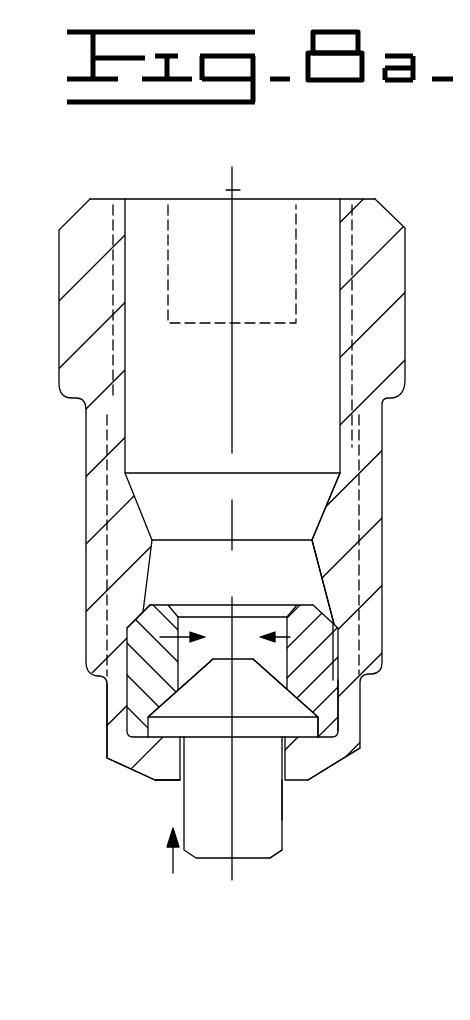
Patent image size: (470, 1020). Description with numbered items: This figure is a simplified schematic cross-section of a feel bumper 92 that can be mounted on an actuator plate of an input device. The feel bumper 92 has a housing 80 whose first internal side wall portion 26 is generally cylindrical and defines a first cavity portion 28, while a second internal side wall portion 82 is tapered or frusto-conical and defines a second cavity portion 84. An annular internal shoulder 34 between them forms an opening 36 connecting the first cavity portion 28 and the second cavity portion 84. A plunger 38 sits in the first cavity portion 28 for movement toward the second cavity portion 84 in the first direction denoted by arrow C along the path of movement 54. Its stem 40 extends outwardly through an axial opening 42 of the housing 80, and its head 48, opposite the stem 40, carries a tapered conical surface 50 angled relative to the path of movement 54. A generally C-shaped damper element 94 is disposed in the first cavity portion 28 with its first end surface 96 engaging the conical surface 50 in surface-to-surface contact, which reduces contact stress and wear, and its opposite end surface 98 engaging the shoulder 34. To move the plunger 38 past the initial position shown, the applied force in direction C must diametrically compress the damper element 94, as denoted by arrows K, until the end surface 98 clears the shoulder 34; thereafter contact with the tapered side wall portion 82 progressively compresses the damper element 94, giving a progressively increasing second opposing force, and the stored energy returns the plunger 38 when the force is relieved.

The first internal side wall portion 26 is at (140, 723).
The first cavity portion 28 is at (140, 695).
The annular internal shoulder 34 is at (322, 622).
The opening 36 is at (143, 610).
The plunger 38 is at (288, 857).
The stem 40 is at (283, 820).
The axial opening 42 is at (283, 802).
The head 48 is at (338, 765).
The conical surface 50 is at (318, 730).
The path of movement 54 is at (232, 190).
The housing 80 is at (108, 758).
The second internal side wall portion 82 is at (320, 580).
The second cavity portion 84 is at (305, 548).
The feel bumper 92 is at (376, 838).
The damper element 94 is at (322, 705).
The first end surface 96 is at (178, 781).
The end surface 98 is at (128, 627).
The arrows K is at (186, 638).
The arrow C is at (168, 856).